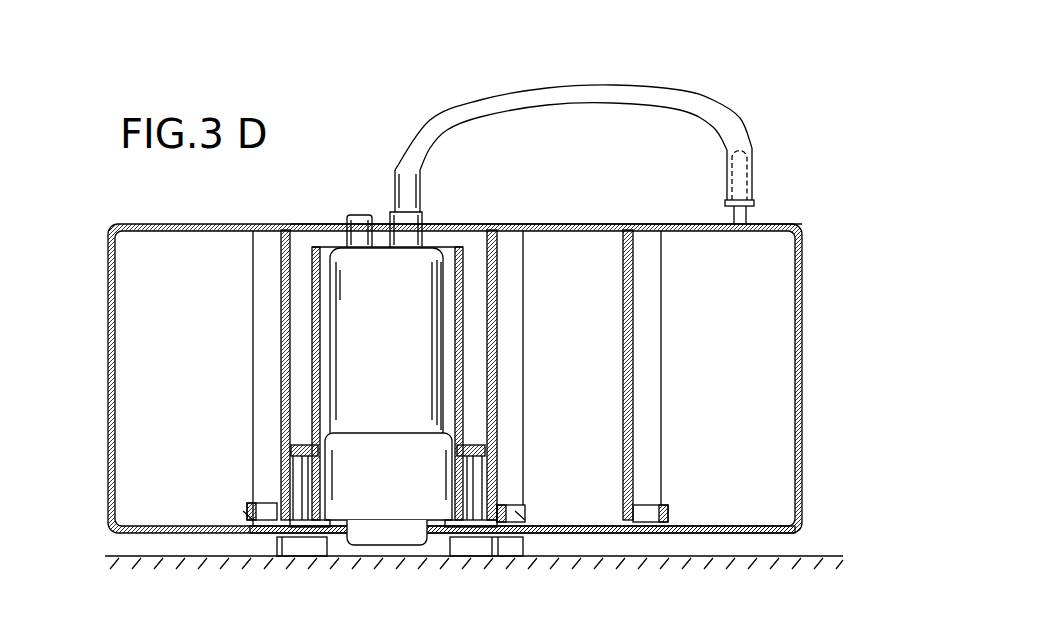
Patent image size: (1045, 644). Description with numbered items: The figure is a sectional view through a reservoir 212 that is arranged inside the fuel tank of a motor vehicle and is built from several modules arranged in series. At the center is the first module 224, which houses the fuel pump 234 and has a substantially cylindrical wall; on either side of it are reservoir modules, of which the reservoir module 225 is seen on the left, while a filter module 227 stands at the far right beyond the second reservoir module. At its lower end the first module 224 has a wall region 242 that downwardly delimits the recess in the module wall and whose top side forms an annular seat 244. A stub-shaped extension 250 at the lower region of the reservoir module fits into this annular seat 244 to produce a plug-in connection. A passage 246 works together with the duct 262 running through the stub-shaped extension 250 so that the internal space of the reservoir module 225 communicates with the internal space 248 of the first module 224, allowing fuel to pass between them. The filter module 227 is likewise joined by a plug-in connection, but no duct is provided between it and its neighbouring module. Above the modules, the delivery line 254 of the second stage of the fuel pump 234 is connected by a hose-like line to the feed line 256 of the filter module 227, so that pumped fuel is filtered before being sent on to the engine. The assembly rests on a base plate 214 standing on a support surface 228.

The reservoir 212 is at (674, 71).
The base plate 214 is at (795, 547).
The first module 224 is at (308, 224).
The reservoir module 225 is at (107, 258).
The filter module 227 is at (803, 388).
The support surface 228 is at (833, 556).
The fuel pump 234 is at (385, 493).
The wall region 242 is at (513, 535).
The annular seat 244 is at (245, 518).
The passage 246 is at (487, 537).
The internal space 248 is at (480, 355).
The stub-shaped extension 250 is at (243, 510).
The delivery line 254 is at (405, 228).
The feed line 256 is at (740, 183).
The duct 262 is at (263, 503).